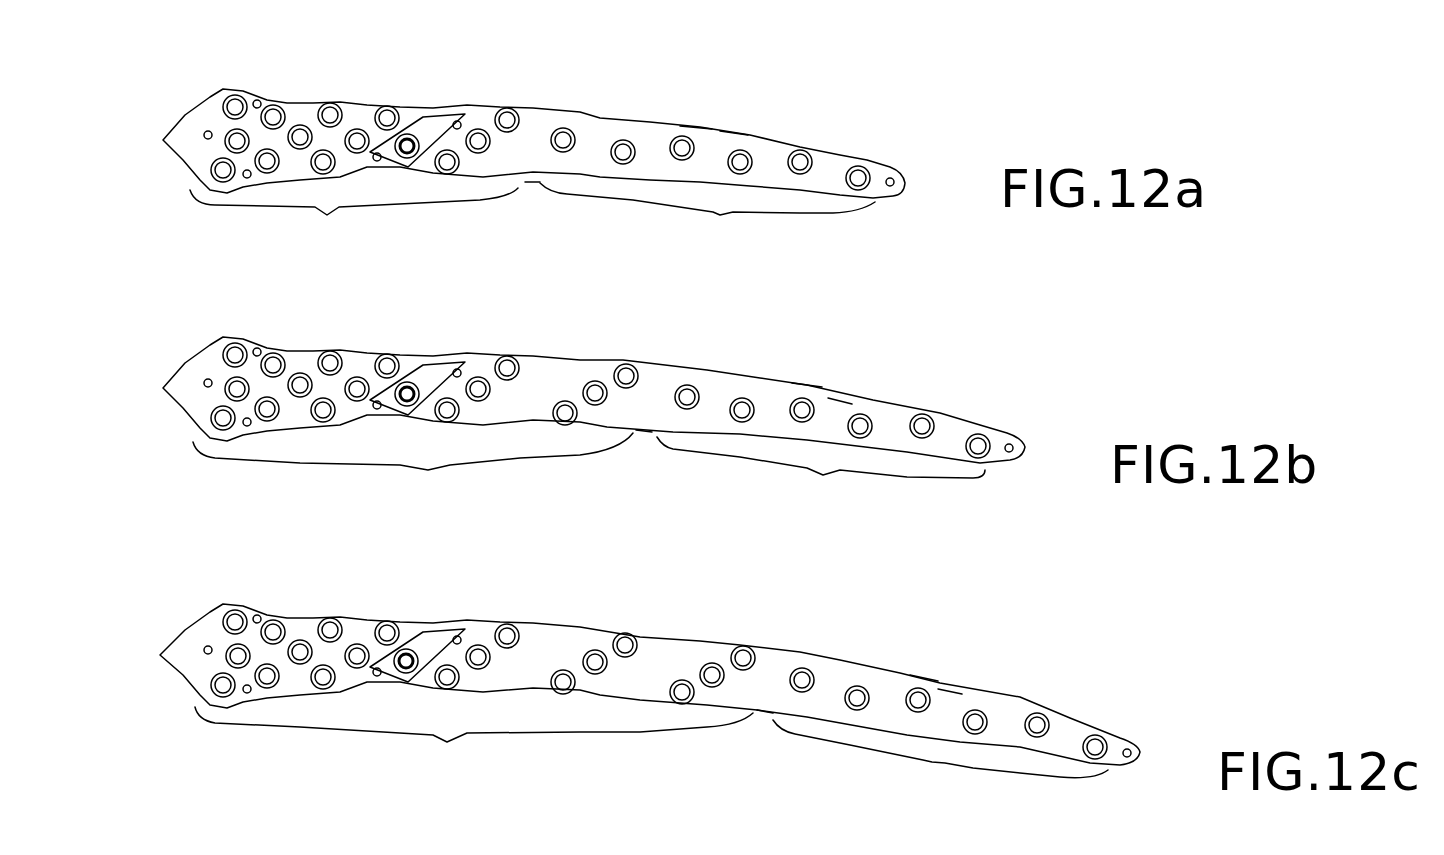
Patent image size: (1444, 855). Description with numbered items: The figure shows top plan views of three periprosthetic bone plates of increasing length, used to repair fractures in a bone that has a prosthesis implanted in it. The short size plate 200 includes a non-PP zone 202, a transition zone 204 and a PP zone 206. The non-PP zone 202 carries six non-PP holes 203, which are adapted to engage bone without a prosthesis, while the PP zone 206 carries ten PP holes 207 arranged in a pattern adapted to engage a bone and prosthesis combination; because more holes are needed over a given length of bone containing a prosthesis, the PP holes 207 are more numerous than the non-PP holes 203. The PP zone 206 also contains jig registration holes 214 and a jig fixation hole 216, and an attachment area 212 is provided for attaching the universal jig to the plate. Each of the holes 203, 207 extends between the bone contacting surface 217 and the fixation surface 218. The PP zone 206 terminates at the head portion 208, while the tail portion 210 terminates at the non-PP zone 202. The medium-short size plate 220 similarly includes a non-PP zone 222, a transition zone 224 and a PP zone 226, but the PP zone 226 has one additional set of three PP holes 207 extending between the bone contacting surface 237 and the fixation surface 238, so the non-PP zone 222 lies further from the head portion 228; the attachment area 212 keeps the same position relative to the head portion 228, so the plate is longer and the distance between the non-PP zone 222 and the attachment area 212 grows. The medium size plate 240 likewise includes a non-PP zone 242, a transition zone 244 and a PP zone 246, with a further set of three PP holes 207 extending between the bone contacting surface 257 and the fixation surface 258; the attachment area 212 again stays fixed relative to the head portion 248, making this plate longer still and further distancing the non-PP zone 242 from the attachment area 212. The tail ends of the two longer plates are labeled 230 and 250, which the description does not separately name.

In FIG. 12A, the short size plate 200 is at (888, 74).
In FIG. 12A, the non-PP zone 202 is at (707, 216).
In FIG. 12A, the non-PP holes 203 is at (572, 133).
In FIG. 12B, the non-PP holes 203 is at (795, 400).
In FIG. 12C, the non-PP holes 203 is at (910, 690).
In FIG. 12A, the transition zone 204 is at (530, 187).
In FIG. 12A, the PP zone 206 is at (354, 217).
In FIG. 12A, the PP holes 207 is at (300, 126).
In FIG. 12B, the PP holes 207 is at (300, 373).
In FIG. 12C, the PP holes 207 is at (304, 640).
In FIG. 12A, the head portion 208 is at (171, 102).
In FIG. 12A, the tail portion 210 is at (942, 159).
In FIG. 12A, the attachment area 212 is at (411, 118).
In FIG. 12B, the attachment area 212 is at (411, 365).
In FIG. 12C, the attachment area 212 is at (411, 636).
In FIG. 12A, the jig registration holes 214 is at (458, 121).
In FIG. 12B, the jig registration holes 214 is at (458, 369).
In FIG. 12C, the jig registration holes 214 is at (458, 636).
In FIG. 12A, the jig fixation hole 216 is at (414, 143).
In FIG. 12B, the jig fixation hole 216 is at (412, 390).
In FIG. 12C, the jig fixation hole 216 is at (410, 656).
In FIG. 12A, the bone contacting surface 217 is at (695, 127).
In FIG. 12A, the fixation surface 218 is at (733, 143).
In FIG. 12B, the medium-short size plate 220 is at (968, 341).
In FIG. 12B, the non-PP zone 222 is at (821, 471).
In FIG. 12B, the transition zone 224 is at (643, 447).
In FIG. 12B, the PP zone 226 is at (413, 467).
In FIG. 12B, the head portion 228 is at (173, 343).
In FIG. 12B, the shaft end 230 is at (1052, 446).
In FIG. 12B, the bone contacting surface 237 is at (807, 384).
In FIG. 12B, the fixation surface 238 is at (840, 402).
In FIG. 12C, the medium size plate 240 is at (1093, 645).
In FIG. 12C, the non-PP zone 242 is at (940, 757).
In FIG. 12C, the transition zone 244 is at (765, 725).
In FIG. 12C, the PP zone 246 is at (474, 740).
In FIG. 12C, the head portion 248 is at (188, 610).
In FIG. 12C, the shaft end 250 is at (1165, 739).
In FIG. 12C, the bone contacting surface 257 is at (923, 677).
In FIG. 12C, the fixation surface 258 is at (948, 693).